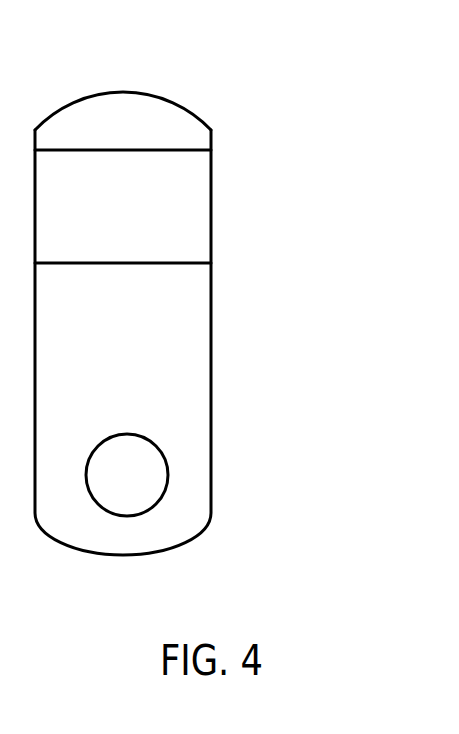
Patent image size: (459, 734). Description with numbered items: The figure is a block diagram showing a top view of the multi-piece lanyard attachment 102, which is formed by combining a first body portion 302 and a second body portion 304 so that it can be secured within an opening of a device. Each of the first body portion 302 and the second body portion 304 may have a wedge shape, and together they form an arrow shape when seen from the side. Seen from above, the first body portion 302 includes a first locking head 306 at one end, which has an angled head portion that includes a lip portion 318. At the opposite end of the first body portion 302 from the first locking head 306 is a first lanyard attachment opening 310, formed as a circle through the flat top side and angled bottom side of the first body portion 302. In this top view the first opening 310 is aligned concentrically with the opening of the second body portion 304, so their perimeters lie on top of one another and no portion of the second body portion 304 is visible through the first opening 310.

The lanyard attachment 102 is at (306, 60).
The first body portion 302 is at (212, 413).
The second body portion 304 is at (183, 103).
The first locking head 306 is at (200, 212).
The lip portion 318 is at (167, 263).
The first lanyard attachment opening 310 is at (168, 474).